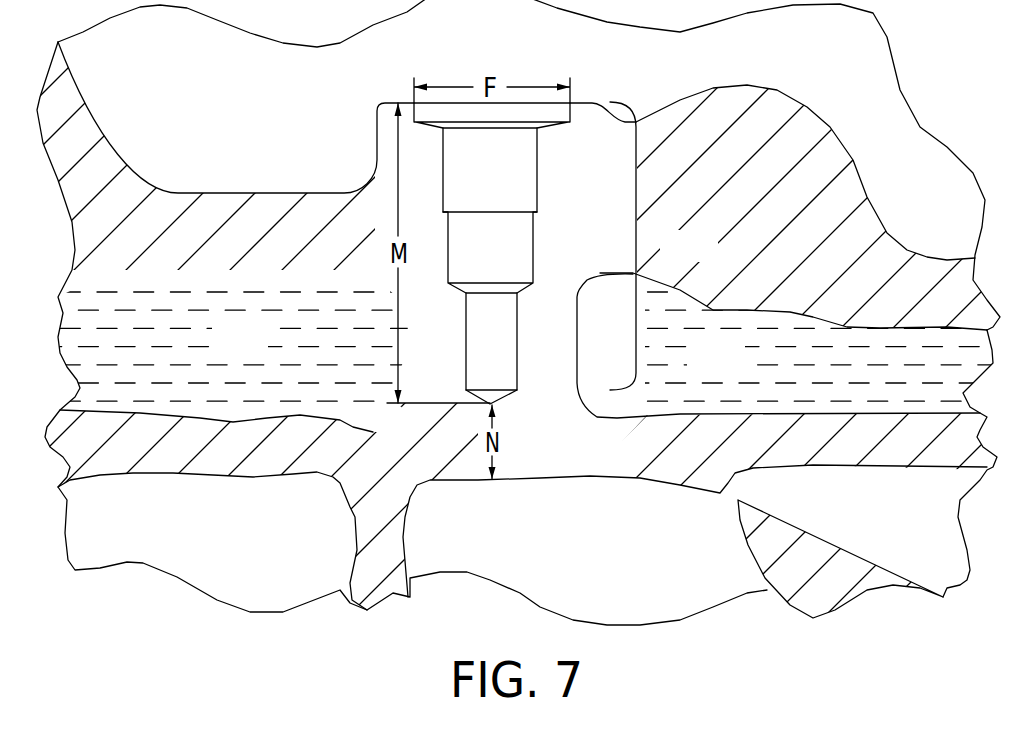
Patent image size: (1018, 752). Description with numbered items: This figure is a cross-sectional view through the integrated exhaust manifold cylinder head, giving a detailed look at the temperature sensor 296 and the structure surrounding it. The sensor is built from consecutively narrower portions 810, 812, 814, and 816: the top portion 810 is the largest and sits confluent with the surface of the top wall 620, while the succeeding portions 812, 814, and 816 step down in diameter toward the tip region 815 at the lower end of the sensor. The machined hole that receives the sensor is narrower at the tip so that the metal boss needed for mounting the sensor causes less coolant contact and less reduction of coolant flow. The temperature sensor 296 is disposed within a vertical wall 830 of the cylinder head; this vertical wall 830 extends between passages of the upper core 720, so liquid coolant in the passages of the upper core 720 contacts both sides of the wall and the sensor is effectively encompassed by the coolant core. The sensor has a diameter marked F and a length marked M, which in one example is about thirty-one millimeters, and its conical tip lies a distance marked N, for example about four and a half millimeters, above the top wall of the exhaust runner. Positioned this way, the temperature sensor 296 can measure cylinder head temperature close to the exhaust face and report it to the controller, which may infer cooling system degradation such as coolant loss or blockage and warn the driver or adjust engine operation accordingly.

The top wall 620 is at (385, 103).
The upper core 720 is at (262, 355).
The temperature sensor 296 is at (638, 246).
The top portion of the temperature sensor 810 is at (548, 116).
The second portion of the temperature sensor 812 is at (537, 197).
The third portion of the temperature sensor 814 is at (534, 248).
The fourth portion of the temperature sensor 816 is at (517, 343).
The pin tip 815 is at (501, 393).
The vertical wall 830 is at (458, 352).